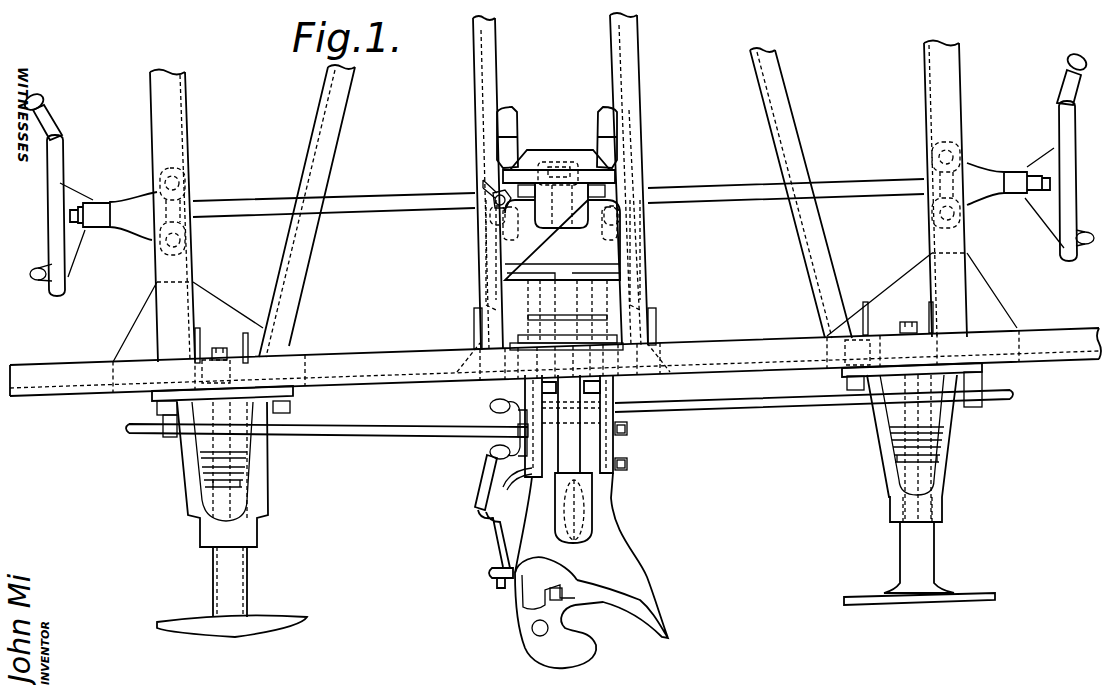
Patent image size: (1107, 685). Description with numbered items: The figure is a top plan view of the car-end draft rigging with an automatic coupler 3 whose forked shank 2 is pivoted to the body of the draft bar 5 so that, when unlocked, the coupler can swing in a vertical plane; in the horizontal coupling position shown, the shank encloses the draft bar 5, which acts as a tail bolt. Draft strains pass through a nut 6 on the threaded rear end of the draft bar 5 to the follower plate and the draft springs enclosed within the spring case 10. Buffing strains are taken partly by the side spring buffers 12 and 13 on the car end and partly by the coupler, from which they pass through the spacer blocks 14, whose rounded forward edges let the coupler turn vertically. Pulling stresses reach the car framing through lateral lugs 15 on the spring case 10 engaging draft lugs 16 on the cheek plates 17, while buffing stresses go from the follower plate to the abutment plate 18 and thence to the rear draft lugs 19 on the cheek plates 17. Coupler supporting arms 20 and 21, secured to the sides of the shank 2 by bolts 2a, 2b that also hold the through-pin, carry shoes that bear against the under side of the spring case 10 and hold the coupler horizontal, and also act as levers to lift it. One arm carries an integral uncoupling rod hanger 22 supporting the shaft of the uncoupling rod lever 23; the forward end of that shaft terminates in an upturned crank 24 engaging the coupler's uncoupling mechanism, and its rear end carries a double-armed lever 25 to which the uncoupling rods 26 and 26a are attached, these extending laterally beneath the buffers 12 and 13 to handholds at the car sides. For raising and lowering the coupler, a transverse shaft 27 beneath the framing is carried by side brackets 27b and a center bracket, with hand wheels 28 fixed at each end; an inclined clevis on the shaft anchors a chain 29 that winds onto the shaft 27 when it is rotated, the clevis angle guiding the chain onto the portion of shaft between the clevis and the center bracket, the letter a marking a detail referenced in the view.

The forked shank 2 is at (604, 500).
The bolt 2a is at (627, 462).
The bolt 2b is at (630, 427).
The automatic coupler 3 is at (557, 612).
The draft bar 5 is at (573, 459).
The nut 6 is at (563, 170).
The spring case 10 is at (564, 275).
The side spring buffer 12 is at (240, 466).
The side spring buffer 13 is at (900, 444).
The spacer blocks 14 is at (535, 386).
The lateral lugs 15 is at (497, 218).
The draft lugs 16 is at (503, 232).
The cheek plates 17 is at (486, 258).
The abutment plate 18 is at (552, 163).
The rear draft lugs 19 is at (490, 150).
The coupler supporting arm 20 is at (515, 478).
The coupler supporting arm 21 is at (612, 444).
The uncoupling rod hanger 22 is at (486, 480).
The uncoupling rod lever 23 is at (487, 521).
The upturned crank 24 is at (497, 582).
The double-armed lever 25 is at (497, 435).
The uncoupling rod 26 is at (402, 433).
The uncoupling rod 26a is at (772, 402).
The transverse shaft 27 is at (405, 205).
The side brackets 27b is at (138, 228).
The hand wheels 28 is at (55, 217).
The chain 29 is at (493, 195).
The lug a is at (478, 180).